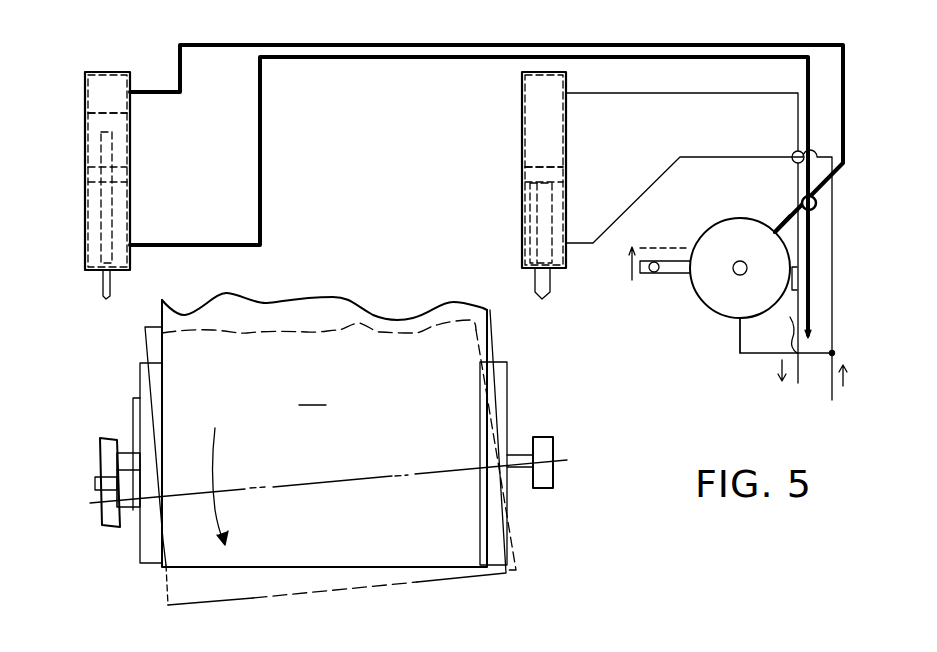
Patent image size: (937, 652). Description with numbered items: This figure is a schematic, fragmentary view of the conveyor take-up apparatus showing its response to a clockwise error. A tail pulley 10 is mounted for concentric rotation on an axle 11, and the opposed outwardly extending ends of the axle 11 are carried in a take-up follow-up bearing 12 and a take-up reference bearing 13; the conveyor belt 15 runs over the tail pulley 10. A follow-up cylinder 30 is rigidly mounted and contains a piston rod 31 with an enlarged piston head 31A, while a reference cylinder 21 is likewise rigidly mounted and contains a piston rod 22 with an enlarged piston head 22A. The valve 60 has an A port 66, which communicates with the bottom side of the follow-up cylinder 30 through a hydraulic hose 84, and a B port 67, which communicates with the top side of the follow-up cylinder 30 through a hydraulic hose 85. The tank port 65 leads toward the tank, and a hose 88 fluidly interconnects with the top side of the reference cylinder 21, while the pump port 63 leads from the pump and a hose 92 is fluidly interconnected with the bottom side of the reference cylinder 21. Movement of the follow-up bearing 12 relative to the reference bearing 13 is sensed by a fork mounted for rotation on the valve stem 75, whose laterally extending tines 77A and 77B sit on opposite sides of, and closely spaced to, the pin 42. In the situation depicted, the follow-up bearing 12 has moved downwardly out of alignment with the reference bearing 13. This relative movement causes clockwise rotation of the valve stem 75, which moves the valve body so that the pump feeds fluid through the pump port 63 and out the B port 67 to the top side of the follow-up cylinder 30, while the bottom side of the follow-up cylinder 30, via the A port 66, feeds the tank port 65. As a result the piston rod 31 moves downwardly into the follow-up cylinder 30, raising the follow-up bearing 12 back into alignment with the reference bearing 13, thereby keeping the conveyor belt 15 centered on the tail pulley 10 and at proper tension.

The tail pulley 10 is at (153, 583).
The axle 11 is at (127, 453).
The follow-up bearing 12 is at (100, 452).
The reference bearing 13 is at (546, 452).
The conveyor belt 15 is at (312, 393).
The reference cylinder 21 is at (524, 73).
The piston rod 22 is at (534, 282).
The piston head 22A is at (527, 171).
The follow-up cylinder 30 is at (98, 72).
The piston rod 31 is at (104, 282).
The piston head 31A is at (88, 114).
The pin 42 is at (653, 272).
The valve 60 is at (708, 233).
The pump port 63 is at (738, 326).
The tank port 65 is at (797, 289).
The A port 66 is at (779, 305).
The B port 67 is at (777, 222).
The valve stem 75 is at (734, 271).
The fork tine 77A is at (632, 264).
The fork tine 77B is at (641, 273).
The hydraulic hose 84 is at (298, 57).
The hydraulic hose 85 is at (343, 45).
The hydraulic hose 88 is at (643, 94).
The hydraulic hose 92 is at (639, 193).